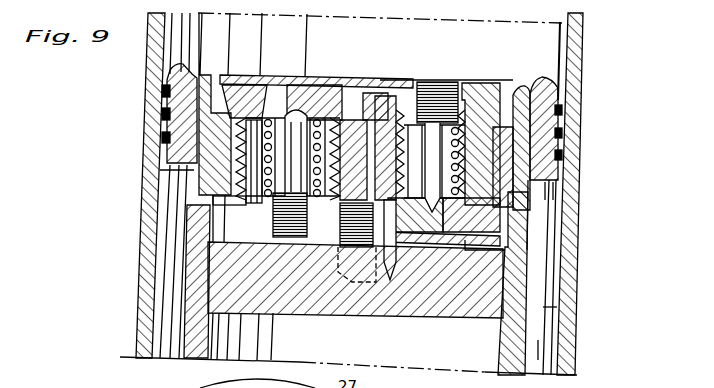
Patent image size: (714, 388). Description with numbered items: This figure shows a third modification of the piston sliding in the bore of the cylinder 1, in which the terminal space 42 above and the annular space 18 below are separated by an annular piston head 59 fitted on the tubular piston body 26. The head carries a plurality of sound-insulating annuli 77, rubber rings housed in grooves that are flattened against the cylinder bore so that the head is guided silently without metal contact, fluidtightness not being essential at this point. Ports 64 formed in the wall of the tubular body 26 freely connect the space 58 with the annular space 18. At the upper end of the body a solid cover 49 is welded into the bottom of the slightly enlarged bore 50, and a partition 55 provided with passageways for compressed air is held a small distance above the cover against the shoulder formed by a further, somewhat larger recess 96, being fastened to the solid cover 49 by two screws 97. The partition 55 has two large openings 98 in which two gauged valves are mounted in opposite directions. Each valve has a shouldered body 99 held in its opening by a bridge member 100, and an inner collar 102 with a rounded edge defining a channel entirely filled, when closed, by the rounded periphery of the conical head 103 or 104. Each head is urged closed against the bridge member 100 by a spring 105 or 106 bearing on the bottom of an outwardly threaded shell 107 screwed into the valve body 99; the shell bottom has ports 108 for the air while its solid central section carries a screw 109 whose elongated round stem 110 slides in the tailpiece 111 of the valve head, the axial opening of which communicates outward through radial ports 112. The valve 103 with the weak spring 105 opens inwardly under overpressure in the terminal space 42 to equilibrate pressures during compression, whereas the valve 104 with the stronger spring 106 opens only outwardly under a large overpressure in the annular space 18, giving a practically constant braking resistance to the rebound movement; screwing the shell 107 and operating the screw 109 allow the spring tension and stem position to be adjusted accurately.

The cylinder 1 is at (577, 56).
The terminal space 42 is at (566, 74).
The sound-insulating annuli 77 is at (563, 125).
The partition 55 is at (503, 126).
The recess 96 is at (566, 196).
The ports 64 is at (522, 224).
The space 58 is at (522, 251).
The annular space 18 is at (552, 308).
The tubular piston body 26 is at (522, 357).
The bore 50 is at (490, 317).
The solid cover 49 is at (447, 309).
The screws 97 is at (330, 238).
The conical valve head 104 is at (504, 248).
The annular piston head 59 is at (167, 82).
The openings 98 is at (232, 173).
The shell 107 is at (246, 212).
The spring 105 is at (250, 202).
The shouldered valve body 99 is at (256, 112).
The radial ports 112 is at (252, 113).
The inner collar 102 is at (284, 92).
The bridge member 100 is at (290, 86).
The conical valve head 103 is at (300, 126).
The elongated round stem 110 is at (318, 116).
The tailpiece 111 is at (382, 84).
The spring 106 is at (410, 128).
The screw 109 is at (457, 127).
The ports 108 is at (457, 112).